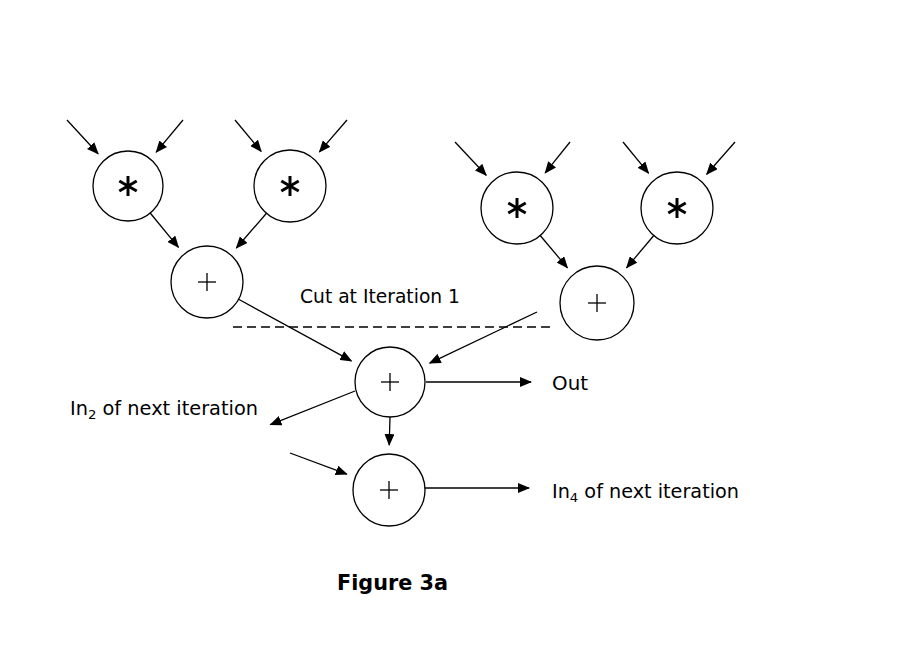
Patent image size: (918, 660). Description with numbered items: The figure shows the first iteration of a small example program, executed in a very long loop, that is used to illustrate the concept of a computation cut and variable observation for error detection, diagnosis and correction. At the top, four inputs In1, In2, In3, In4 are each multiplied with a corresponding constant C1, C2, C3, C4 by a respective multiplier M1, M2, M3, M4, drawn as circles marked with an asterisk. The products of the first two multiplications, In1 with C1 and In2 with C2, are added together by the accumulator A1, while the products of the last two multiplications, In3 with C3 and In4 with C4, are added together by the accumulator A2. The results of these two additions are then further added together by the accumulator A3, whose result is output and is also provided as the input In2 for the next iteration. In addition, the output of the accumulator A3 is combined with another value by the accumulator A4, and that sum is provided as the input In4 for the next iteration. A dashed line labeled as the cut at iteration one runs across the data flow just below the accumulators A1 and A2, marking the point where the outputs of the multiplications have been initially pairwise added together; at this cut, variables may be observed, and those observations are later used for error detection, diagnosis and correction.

The multiplier M1 is at (109, 186).
The multiplier M2 is at (261, 186).
The multiplier M3 is at (497, 208).
The multiplier M4 is at (649, 208).
The accumulator A1 is at (187, 282).
The accumulator A2 is at (577, 303).
The accumulator A3 is at (411, 391).
The accumulator A4 is at (410, 494).
The constant C1 is at (74, 123).
The constant C2 is at (237, 121).
The constant C3 is at (460, 144).
The constant C4 is at (625, 143).
The input In1 is at (168, 122).
The input In2 is at (333, 122).
The input In3 is at (556, 143).
The input In4 is at (721, 144).